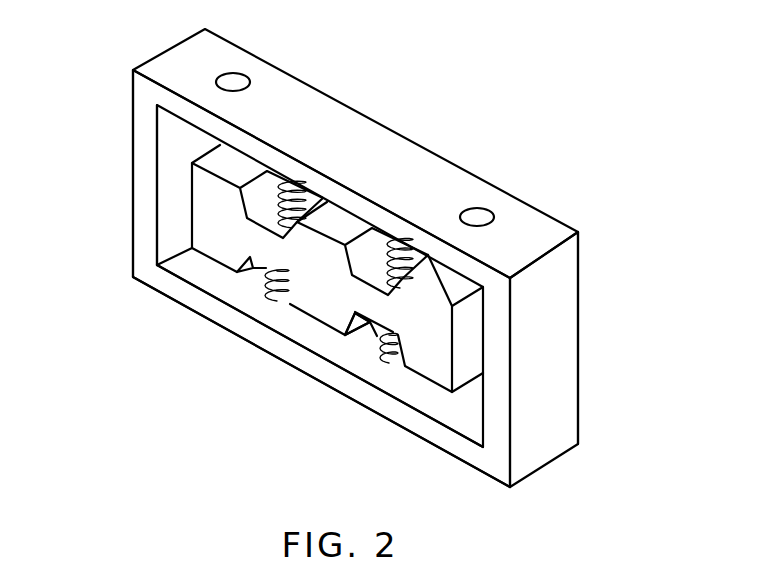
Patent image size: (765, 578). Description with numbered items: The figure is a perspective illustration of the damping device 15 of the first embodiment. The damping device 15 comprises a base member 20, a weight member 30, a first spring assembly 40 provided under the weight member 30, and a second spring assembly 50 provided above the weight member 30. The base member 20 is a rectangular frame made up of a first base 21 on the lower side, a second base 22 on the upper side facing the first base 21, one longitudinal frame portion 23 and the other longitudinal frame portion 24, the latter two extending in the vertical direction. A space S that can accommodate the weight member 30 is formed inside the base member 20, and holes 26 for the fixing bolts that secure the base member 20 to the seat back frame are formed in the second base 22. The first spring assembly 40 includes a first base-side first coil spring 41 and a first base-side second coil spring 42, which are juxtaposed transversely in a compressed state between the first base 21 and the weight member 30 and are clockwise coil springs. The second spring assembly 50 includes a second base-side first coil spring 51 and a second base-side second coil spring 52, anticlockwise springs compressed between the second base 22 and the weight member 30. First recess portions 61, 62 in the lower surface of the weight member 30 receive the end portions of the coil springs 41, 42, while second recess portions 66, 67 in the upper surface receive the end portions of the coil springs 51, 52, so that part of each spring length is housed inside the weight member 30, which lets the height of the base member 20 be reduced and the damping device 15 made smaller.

The damping device 15 is at (472, 106).
The base member 20 is at (588, 313).
The first base 21 is at (353, 390).
The second base 22 is at (357, 127).
The one longitudinal frame portion 23 is at (143, 132).
The other longitudinal frame portion 24 is at (555, 373).
The holes 26 is at (237, 82).
The weight member 30 is at (335, 287).
The first spring assembly 40 is at (255, 285).
The first base-side first coil spring 41 is at (280, 298).
The first base-side second coil spring 42 is at (398, 362).
The second spring assembly 50 is at (255, 203).
The second base-side first coil spring 51 is at (293, 185).
The second base-side second coil spring 52 is at (405, 235).
The first recess portion 61 is at (240, 272).
The first recess portion 62 is at (372, 325).
The second recess portion 66 is at (266, 223).
The second recess portion 67 is at (373, 277).
The space S is at (458, 405).